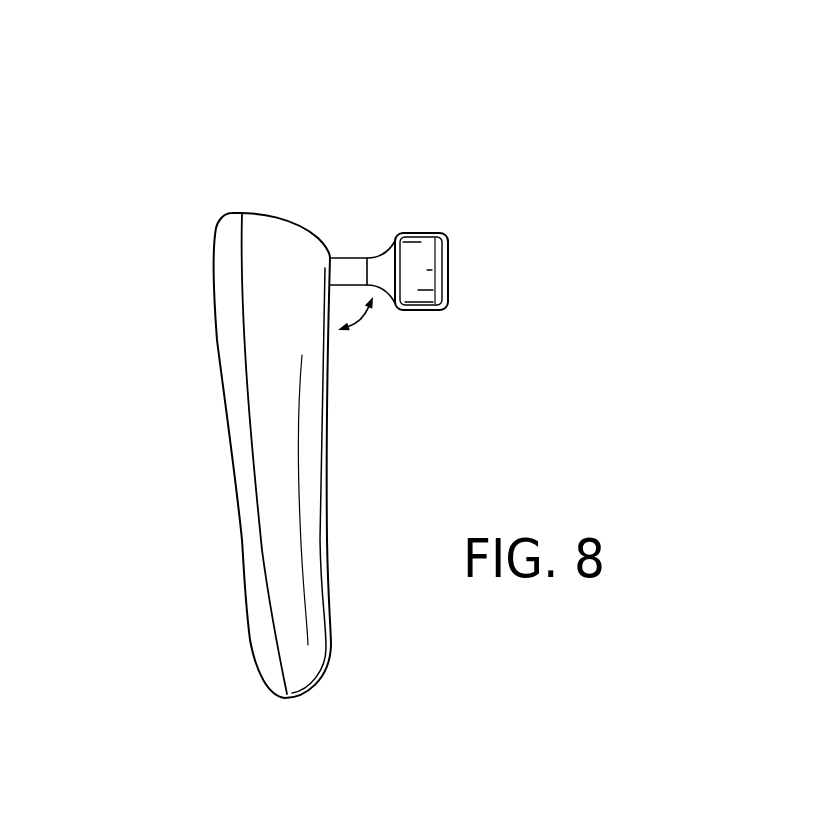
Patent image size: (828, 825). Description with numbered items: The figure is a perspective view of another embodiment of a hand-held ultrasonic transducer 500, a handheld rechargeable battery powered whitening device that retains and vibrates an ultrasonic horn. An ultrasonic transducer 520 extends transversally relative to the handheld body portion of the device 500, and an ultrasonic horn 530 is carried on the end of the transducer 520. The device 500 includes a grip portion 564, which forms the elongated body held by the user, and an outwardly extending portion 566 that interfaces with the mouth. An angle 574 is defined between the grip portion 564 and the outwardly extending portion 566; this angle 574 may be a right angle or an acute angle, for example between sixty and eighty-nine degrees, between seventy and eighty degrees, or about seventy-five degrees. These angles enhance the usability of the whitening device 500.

The hand-held ultrasonic transducer 500 is at (187, 356).
The ultrasonic transducer 520 is at (348, 257).
The ultrasonic horn 530 is at (427, 233).
The grip portion 564 is at (267, 498).
The outwardly extending portion 566 is at (382, 226).
The angle 574 is at (363, 317).